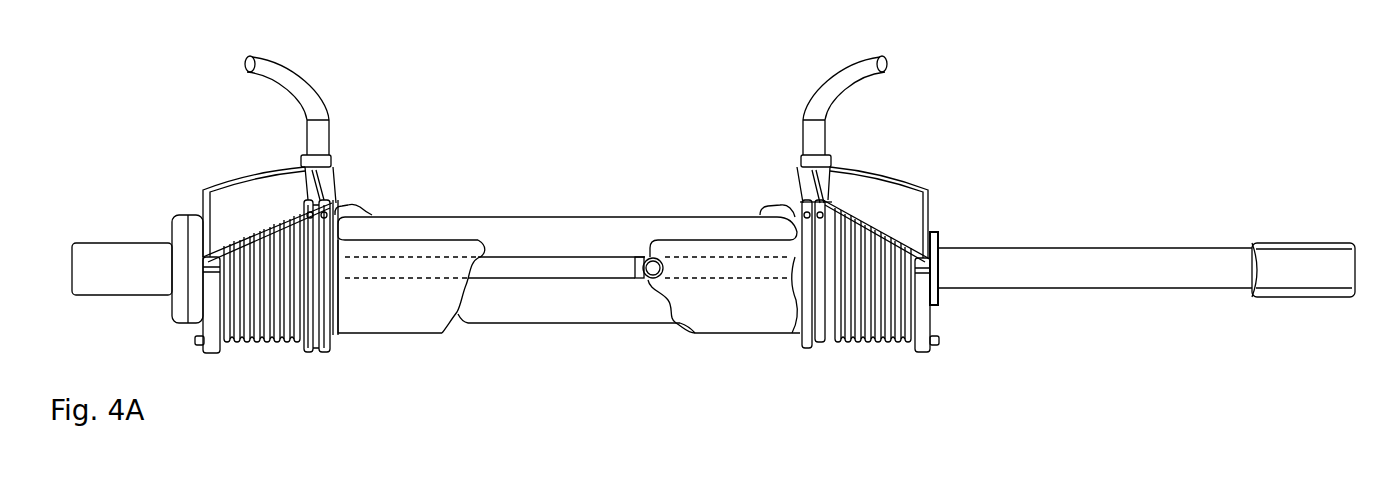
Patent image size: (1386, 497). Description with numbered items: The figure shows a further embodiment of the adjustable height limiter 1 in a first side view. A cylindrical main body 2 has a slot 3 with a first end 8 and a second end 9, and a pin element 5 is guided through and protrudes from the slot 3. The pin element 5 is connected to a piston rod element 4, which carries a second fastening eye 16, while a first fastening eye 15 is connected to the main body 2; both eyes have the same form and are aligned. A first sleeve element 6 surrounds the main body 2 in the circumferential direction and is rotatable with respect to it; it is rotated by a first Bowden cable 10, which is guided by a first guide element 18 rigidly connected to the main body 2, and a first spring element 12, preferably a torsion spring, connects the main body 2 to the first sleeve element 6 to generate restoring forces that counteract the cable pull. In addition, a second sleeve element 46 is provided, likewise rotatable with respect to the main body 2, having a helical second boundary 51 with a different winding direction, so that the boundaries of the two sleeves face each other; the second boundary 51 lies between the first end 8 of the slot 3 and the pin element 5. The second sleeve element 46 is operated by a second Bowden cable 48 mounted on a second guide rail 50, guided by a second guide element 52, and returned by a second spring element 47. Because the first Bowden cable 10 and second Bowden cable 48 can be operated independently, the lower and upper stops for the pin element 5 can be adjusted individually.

The adjustable height limiter 1 is at (1224, 106).
The main body 2 is at (562, 226).
The slot 3 is at (558, 283).
The piston rod element 4 is at (1068, 258).
The pin element 5 is at (648, 285).
The first sleeve element 6 is at (725, 312).
The first end of slot 8 is at (350, 328).
The second end of slot 9 is at (780, 330).
The first Bowden cable 10 is at (827, 85).
The first spring element 12 is at (872, 345).
The first fastening eye 15 is at (121, 258).
The second fastening eye 16 is at (1303, 255).
The first guide element 18 is at (882, 190).
The second sleeve element 46 is at (425, 325).
The second spring element 47 is at (253, 343).
The second Bowden cable 48 is at (307, 88).
The second guide rail 50 is at (310, 345).
The second boundary 51 is at (468, 325).
The second guide element 52 is at (250, 186).